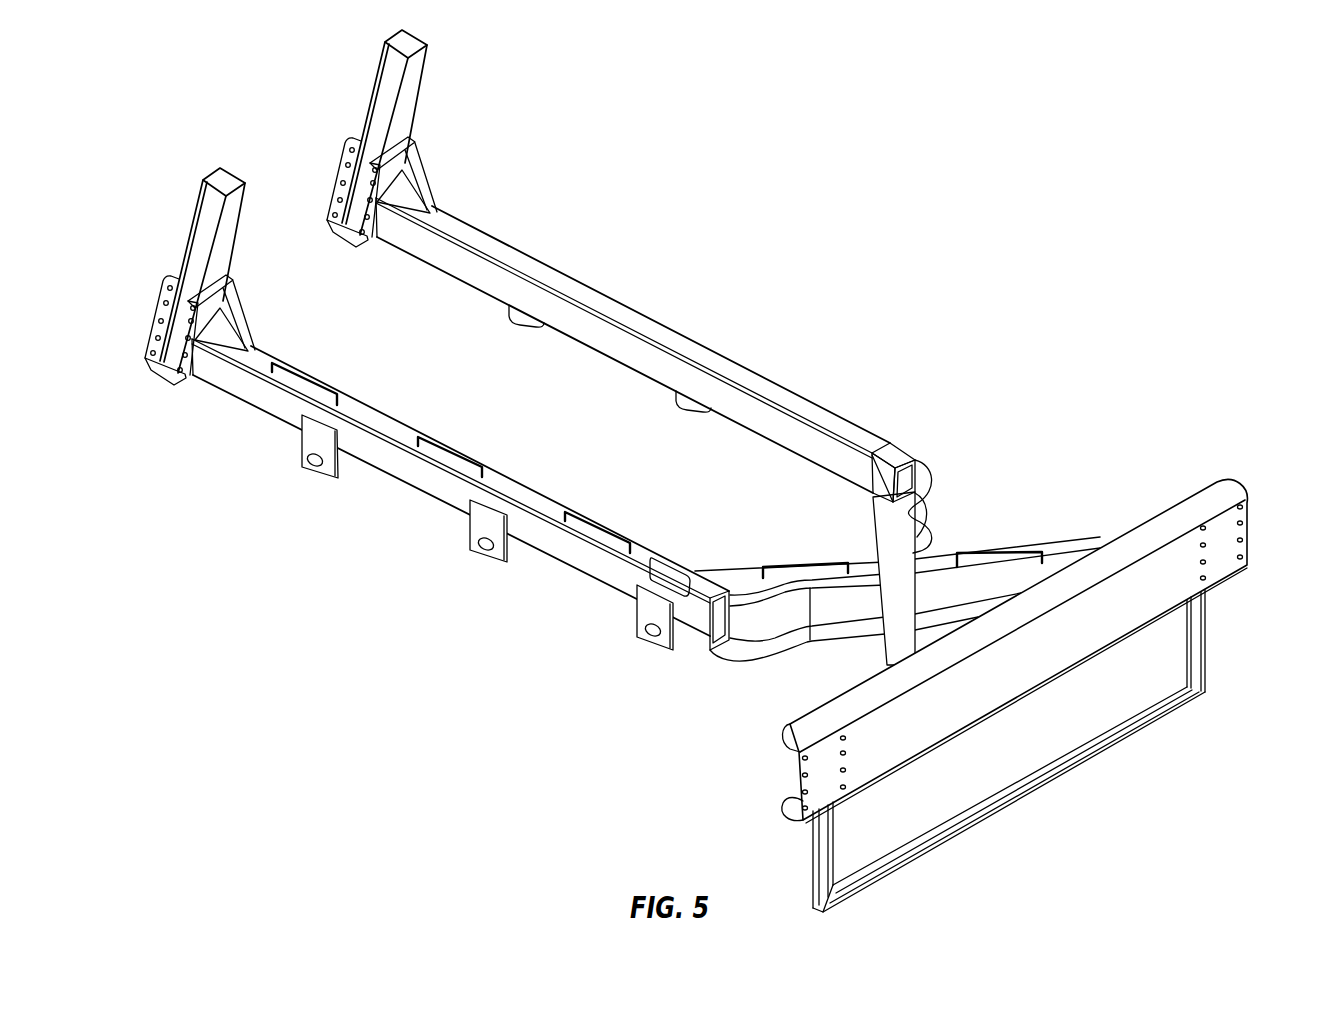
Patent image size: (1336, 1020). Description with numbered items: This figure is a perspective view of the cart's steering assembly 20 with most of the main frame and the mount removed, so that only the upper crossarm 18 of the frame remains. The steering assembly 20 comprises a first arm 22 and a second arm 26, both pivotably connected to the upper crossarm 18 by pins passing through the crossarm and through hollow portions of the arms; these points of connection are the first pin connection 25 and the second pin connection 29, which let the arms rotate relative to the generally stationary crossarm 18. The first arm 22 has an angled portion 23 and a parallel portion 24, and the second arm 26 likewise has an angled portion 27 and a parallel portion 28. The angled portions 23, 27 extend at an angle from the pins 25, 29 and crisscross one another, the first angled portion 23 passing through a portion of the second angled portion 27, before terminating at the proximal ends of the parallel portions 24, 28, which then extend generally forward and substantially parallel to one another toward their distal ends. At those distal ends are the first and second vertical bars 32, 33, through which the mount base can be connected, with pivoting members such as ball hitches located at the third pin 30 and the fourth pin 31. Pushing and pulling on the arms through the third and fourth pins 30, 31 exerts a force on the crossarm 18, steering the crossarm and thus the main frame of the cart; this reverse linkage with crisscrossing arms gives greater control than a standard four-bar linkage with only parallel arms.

The upper crossarm 18 is at (1230, 534).
The steering assembly 20 is at (716, 226).
The first arm 22 is at (671, 312).
The angled portion 23 is at (893, 615).
The parallel portion 24 is at (762, 390).
The first pin connection 25 is at (898, 671).
The second arm 26 is at (411, 514).
The angled portion 27 is at (940, 567).
The parallel portion 28 is at (517, 495).
The second pin connection 29 is at (1113, 547).
The third pin 30 is at (343, 238).
The fourth pin 31 is at (156, 375).
The first vertical bar 32 is at (388, 73).
The second vertical bar 33 is at (200, 224).